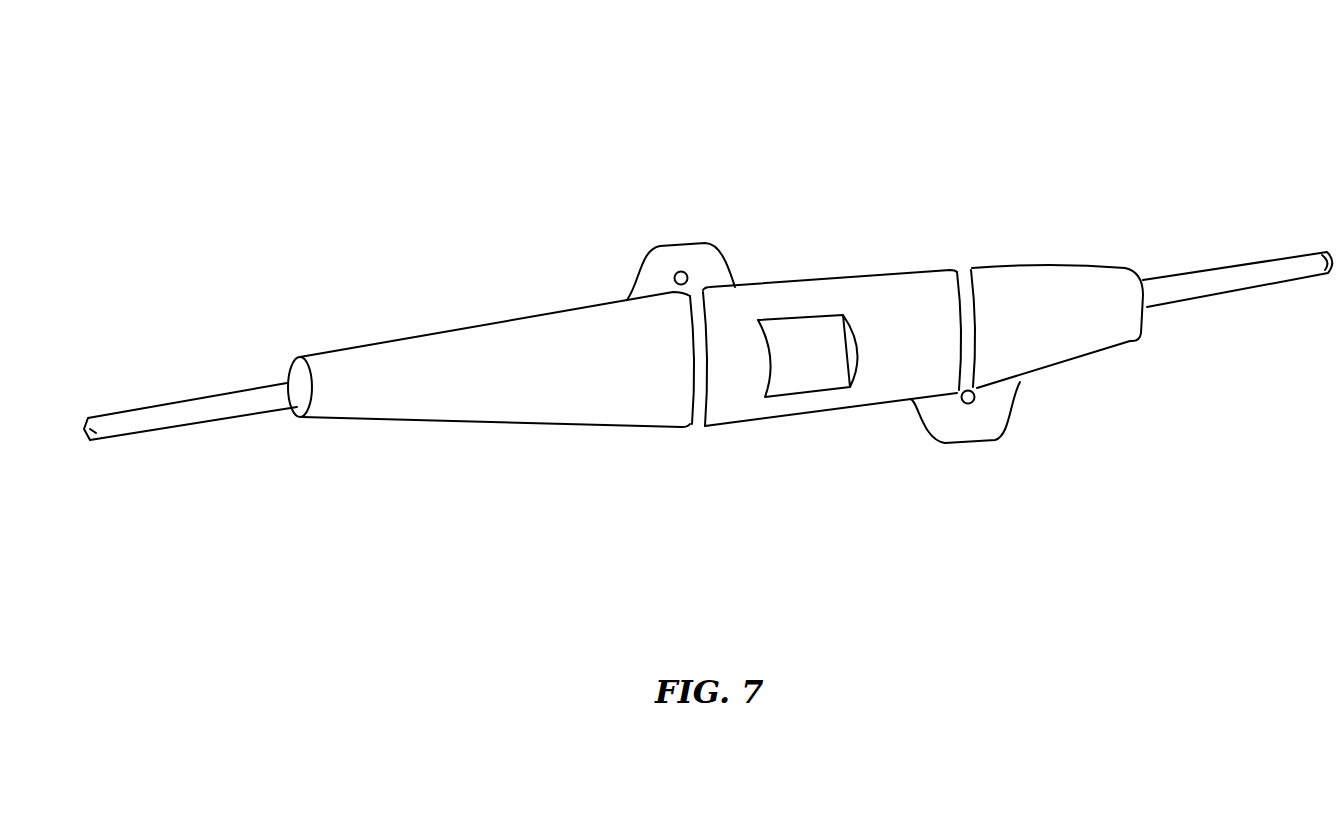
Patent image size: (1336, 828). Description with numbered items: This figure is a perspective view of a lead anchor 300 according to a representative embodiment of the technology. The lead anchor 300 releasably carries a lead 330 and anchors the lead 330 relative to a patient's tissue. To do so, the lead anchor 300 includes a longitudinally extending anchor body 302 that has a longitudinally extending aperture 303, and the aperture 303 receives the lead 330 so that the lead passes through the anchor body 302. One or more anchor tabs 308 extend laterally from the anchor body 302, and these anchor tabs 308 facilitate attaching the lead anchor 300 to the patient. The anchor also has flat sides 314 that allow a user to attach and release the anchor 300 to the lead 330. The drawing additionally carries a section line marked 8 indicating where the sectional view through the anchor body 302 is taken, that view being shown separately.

The lead anchor 300 is at (708, 282).
The anchor body 302 is at (477, 352).
The aperture 303 is at (292, 377).
The anchor tabs 308 is at (677, 253).
The flat sides 314 is at (807, 365).
The lead 330 is at (159, 403).
The section line 8- 8 is at (847, 613).